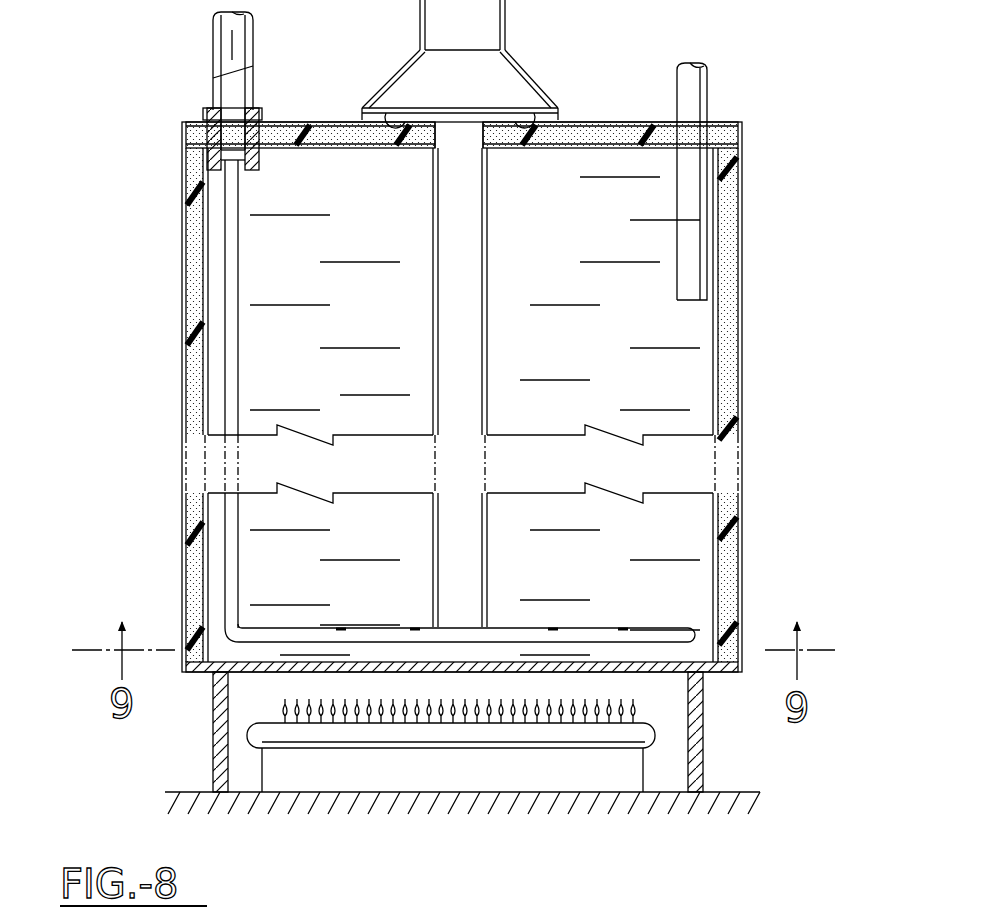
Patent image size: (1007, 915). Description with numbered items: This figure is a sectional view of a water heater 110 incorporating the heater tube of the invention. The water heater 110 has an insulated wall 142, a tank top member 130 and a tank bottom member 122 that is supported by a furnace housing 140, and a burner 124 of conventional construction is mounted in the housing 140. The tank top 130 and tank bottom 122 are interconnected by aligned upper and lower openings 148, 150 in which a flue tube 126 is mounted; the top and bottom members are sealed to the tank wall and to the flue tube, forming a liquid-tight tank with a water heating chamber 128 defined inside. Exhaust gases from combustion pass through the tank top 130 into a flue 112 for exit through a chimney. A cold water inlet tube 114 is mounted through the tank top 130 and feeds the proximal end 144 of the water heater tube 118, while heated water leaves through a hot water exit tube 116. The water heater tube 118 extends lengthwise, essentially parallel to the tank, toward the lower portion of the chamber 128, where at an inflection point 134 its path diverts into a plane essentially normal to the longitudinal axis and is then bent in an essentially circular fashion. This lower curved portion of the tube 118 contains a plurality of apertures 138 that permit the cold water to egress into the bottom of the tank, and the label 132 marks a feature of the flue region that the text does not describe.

The water heater 110 is at (752, 103).
The flue 112 is at (533, 83).
The cold water inlet tube 114 is at (218, 38).
The hot water exit tube 116 is at (678, 93).
The water heater tube 118 is at (222, 296).
The tank bottom member 122 is at (673, 678).
The burner 124 is at (515, 750).
The flue tube 126 is at (487, 388).
The water heating chamber 128 is at (697, 372).
The tank top member 130 is at (322, 122).
The funnel base 132 is at (482, 100).
The inflection point 134 is at (232, 613).
The apertures 138 is at (415, 643).
The furnace housing 140 is at (213, 760).
The insulated wall 142 is at (182, 381).
The proximal end 144 is at (222, 178).
The upper aligned opening 148 is at (463, 140).
The lower aligned opening 150 is at (466, 673).